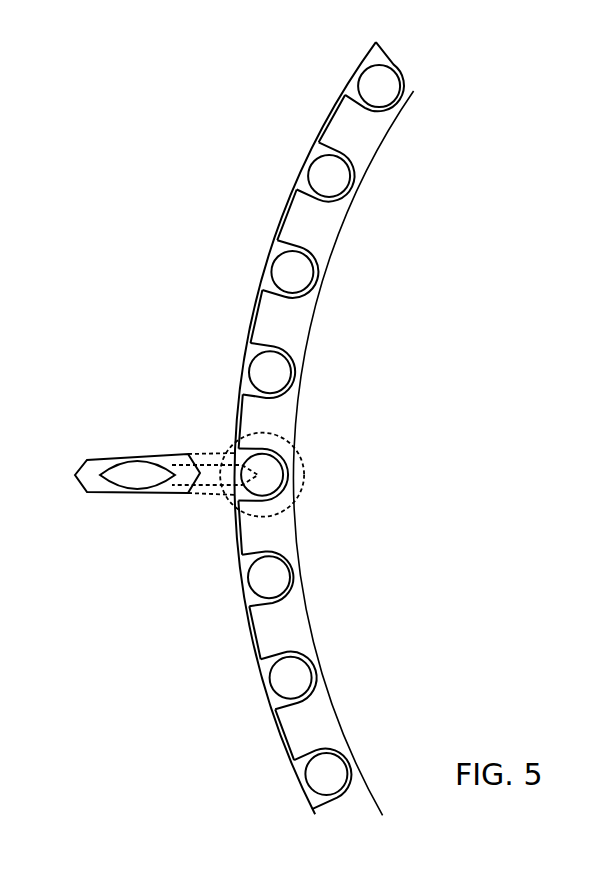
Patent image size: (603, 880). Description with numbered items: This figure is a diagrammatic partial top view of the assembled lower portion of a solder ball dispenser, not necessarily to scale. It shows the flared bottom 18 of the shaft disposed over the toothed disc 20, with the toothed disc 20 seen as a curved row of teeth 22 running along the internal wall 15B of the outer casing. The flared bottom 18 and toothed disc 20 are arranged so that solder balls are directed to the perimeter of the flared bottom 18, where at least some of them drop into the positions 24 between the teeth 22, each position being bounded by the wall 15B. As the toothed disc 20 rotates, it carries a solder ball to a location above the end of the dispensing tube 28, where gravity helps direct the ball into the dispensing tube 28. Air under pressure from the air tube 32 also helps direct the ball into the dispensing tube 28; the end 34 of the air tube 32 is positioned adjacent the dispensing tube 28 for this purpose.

The flared bottom 18 is at (388, 189).
The toothed disc 20 is at (322, 238).
The internal wall 15B is at (249, 333).
The teeth 22 is at (373, 45).
The positions 24 is at (359, 80).
The dispensing tube 28 is at (283, 491).
The air tube 32 is at (142, 456).
The end of air tube 34 is at (283, 458).